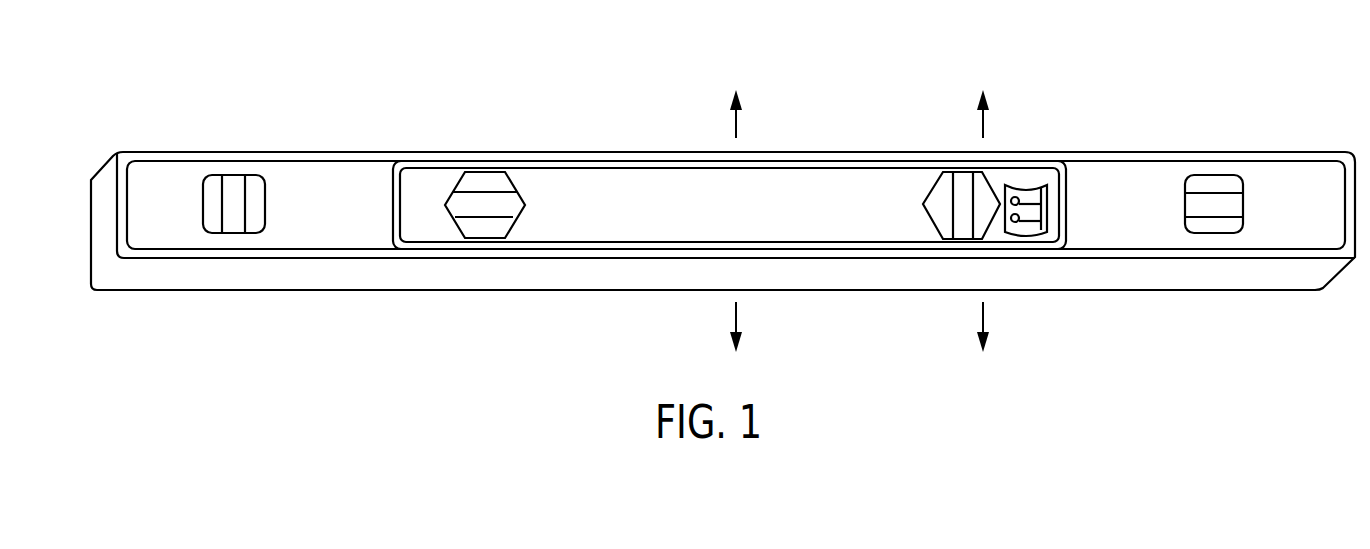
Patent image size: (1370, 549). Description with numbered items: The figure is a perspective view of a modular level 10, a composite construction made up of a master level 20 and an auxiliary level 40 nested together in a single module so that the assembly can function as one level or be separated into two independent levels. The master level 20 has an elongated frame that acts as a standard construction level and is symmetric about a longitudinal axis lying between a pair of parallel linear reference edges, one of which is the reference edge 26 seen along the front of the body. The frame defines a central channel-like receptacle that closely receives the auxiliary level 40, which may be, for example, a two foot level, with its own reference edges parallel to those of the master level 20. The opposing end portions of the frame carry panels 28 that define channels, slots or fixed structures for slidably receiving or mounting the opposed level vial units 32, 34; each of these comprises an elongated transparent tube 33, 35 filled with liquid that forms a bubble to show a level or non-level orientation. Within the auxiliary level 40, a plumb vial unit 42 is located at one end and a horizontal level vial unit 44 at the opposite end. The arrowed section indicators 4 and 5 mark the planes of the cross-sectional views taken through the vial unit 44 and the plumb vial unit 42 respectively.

The modular level 10 is at (452, 102).
The master level 20 is at (262, 260).
The reference edge 26 is at (373, 277).
The panel 28 is at (302, 192).
The level vial unit 32 is at (212, 223).
The transparent tube 33 is at (228, 189).
The level vial unit 34 is at (1223, 227).
The transparent tube 35 is at (1200, 198).
The auxiliary level 40 is at (603, 243).
The plumb vial unit 42 is at (977, 217).
The horizontal level vial unit 44 is at (492, 208).
The section line 4- 4 is at (736, 223).
The section line 5- 5 is at (983, 223).